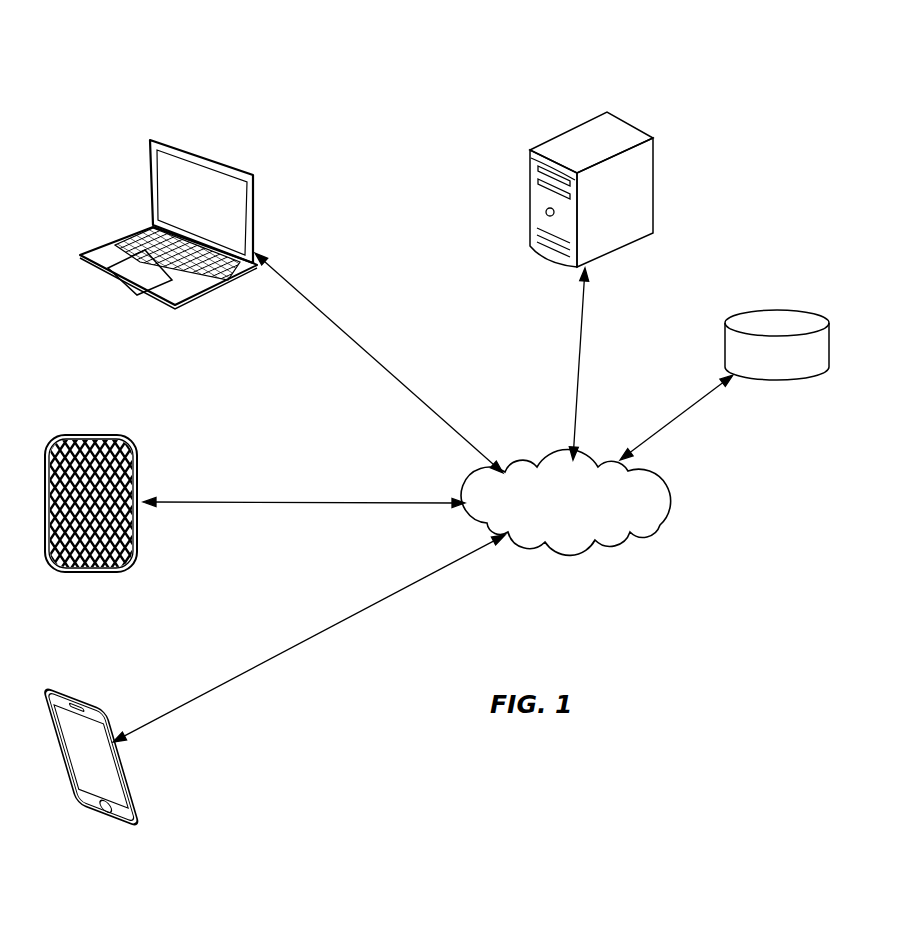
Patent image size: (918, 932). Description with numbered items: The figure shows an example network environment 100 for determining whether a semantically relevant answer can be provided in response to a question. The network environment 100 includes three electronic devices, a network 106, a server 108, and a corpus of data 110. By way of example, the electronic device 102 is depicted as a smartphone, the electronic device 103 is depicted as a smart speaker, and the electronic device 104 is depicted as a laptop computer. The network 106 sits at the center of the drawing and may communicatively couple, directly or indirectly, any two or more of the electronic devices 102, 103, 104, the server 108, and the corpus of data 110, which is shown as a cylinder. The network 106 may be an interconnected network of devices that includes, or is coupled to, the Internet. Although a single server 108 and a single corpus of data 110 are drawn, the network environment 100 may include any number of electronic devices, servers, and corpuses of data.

The network environment 100 is at (154, 85).
The electronic device 102 is at (82, 818).
The electronic device 103 is at (110, 573).
The electronic device 104 is at (168, 307).
The network 106 is at (597, 543).
The server 108 is at (543, 142).
The corpus of data 110 is at (778, 382).